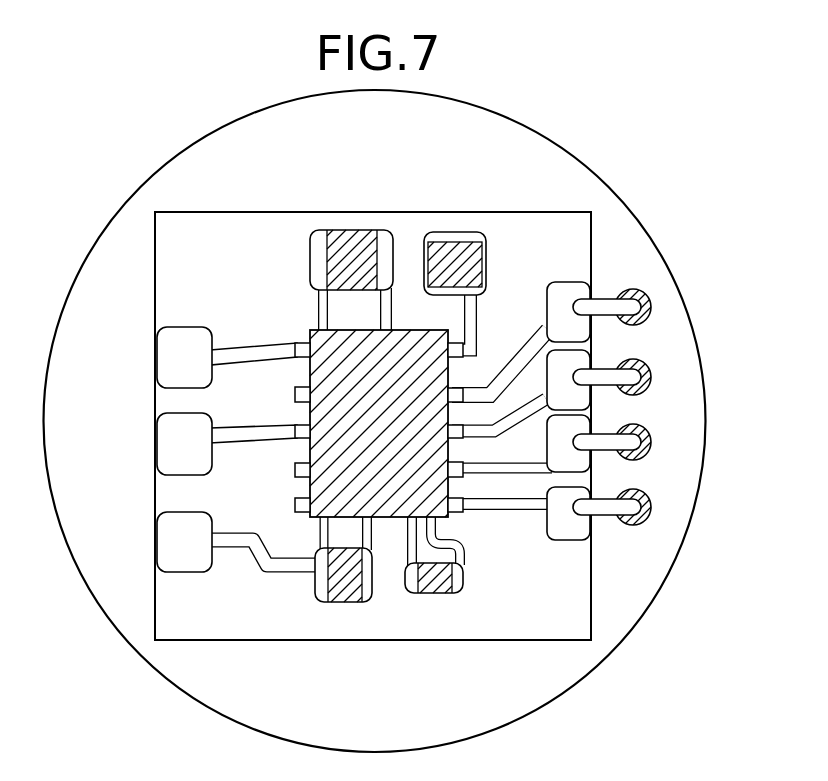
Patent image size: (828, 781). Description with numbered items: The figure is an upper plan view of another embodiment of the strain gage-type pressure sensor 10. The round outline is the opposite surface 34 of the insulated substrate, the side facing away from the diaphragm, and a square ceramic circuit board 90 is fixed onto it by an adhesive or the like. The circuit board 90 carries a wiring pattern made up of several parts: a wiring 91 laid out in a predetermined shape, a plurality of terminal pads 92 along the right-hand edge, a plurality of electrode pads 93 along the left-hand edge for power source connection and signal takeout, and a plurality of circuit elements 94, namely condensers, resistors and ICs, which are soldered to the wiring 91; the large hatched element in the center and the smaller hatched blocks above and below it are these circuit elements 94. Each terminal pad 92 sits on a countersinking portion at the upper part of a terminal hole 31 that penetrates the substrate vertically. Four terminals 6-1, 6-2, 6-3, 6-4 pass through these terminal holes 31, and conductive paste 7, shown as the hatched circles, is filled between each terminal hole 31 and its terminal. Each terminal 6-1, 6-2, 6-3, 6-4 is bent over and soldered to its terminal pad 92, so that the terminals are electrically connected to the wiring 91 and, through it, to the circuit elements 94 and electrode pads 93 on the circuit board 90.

The pressure sensor 10 is at (602, 151).
The opposite surface 34 is at (176, 661).
The circuit board 90 is at (175, 241).
The wiring 91 is at (535, 332).
The terminal pad 92 is at (575, 290).
The electrode pad 93 is at (172, 357).
The circuit element 94 is at (356, 246).
The conductive paste 7 is at (647, 320).
The terminal 6-1 is at (600, 298).
The terminal 6-2 is at (642, 378).
The terminal 6-3 is at (643, 442).
The terminal 6-4 is at (642, 510).
The terminal hole 31 is at (636, 537).